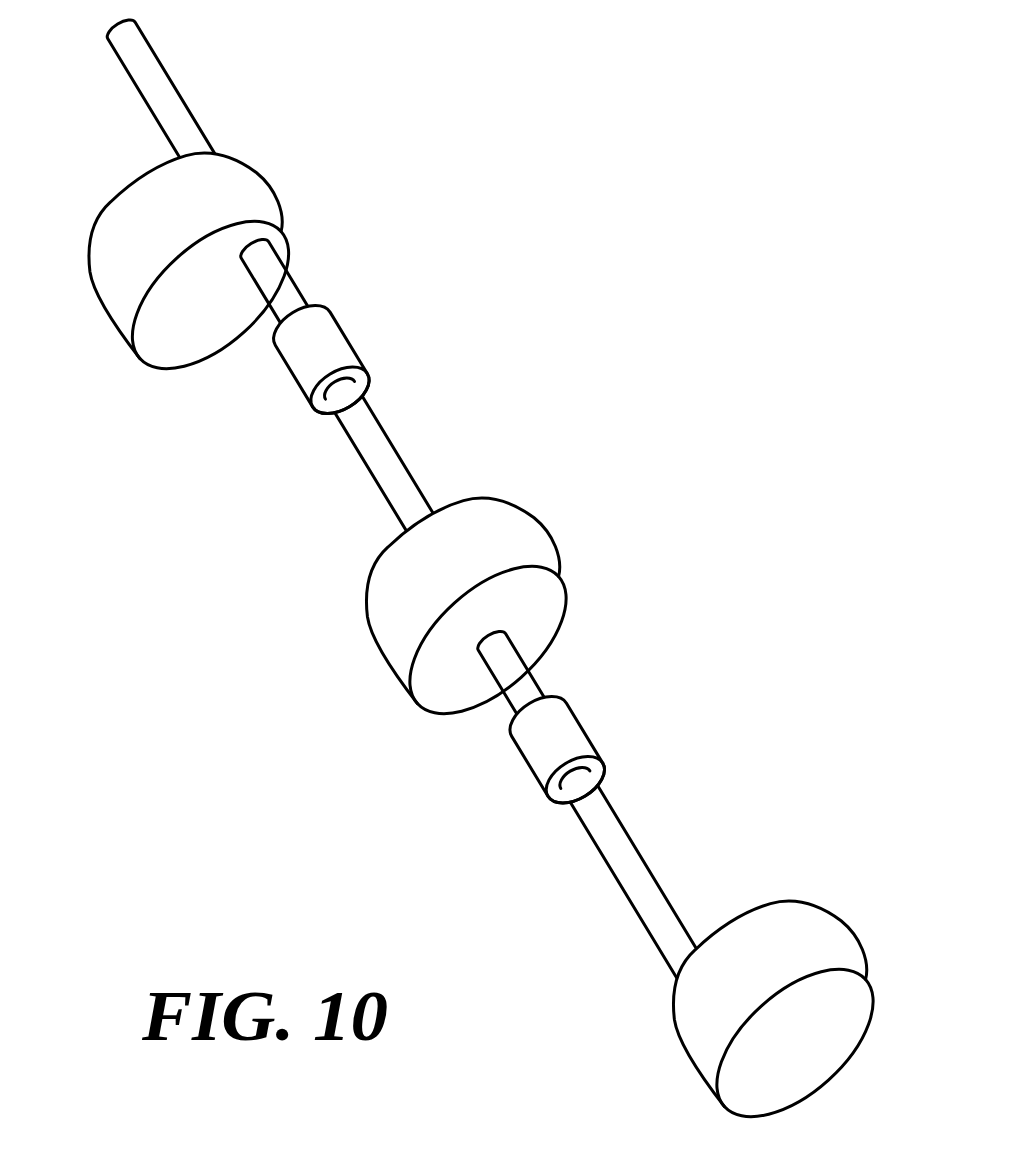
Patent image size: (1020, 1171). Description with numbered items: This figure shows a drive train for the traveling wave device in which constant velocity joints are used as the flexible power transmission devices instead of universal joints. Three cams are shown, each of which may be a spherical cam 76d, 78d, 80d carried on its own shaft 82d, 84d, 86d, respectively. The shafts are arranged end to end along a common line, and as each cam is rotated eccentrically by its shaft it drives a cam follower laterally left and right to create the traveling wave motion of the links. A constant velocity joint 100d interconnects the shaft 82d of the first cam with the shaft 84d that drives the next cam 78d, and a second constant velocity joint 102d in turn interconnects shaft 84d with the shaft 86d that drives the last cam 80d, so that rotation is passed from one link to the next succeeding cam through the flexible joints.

The spherical cam 76d is at (245, 178).
The spherical cam 78d is at (522, 520).
The spherical cam 80d is at (812, 933).
The shaft 82d is at (144, 98).
The shaft 84d is at (397, 460).
The shaft 86d is at (643, 863).
The constant velocity joint 100d is at (323, 325).
The constant velocity joint 102d is at (571, 732).